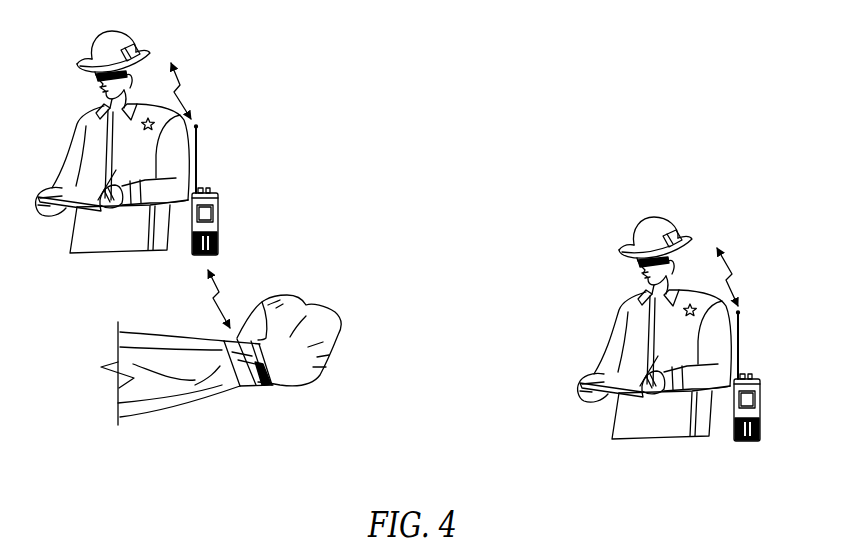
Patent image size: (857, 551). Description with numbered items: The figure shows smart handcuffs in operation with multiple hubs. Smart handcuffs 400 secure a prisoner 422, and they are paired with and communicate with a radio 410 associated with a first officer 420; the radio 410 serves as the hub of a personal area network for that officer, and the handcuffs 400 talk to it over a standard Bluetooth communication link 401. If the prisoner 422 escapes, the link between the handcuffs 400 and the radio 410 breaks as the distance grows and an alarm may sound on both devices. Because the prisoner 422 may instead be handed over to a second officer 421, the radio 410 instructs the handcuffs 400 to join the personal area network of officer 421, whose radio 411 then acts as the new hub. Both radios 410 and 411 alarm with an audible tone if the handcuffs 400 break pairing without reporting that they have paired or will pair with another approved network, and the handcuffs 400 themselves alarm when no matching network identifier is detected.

The smart handcuffs 400 is at (272, 388).
The Bluetooth communication link 401 is at (221, 287).
The radio 410 is at (219, 208).
The radio 411 is at (780, 376).
The officer 420 is at (140, 50).
The officer 421 is at (703, 228).
The prisoner 422 is at (340, 332).